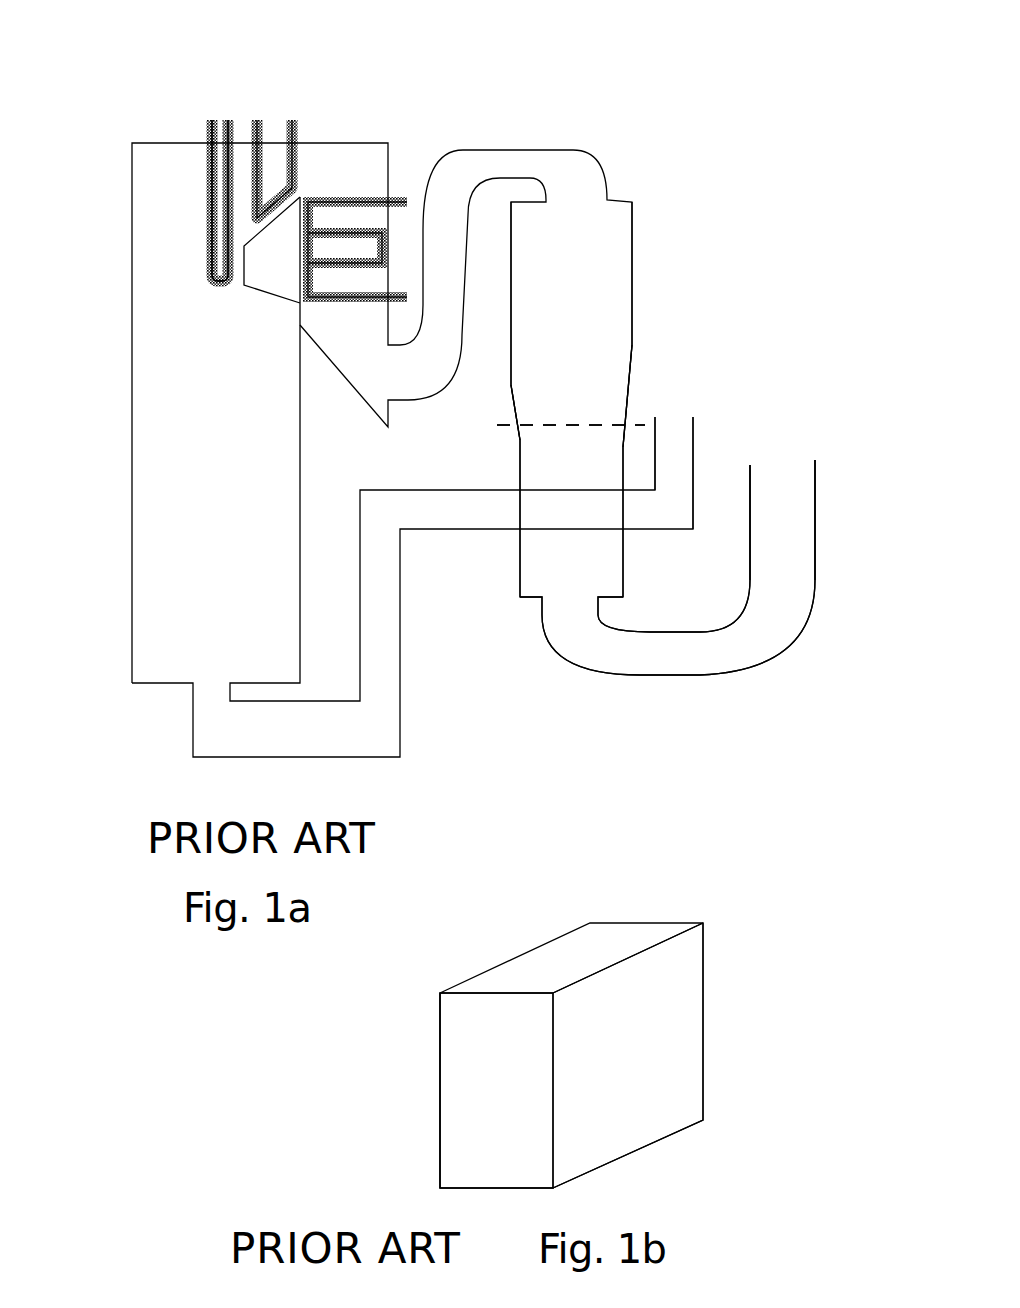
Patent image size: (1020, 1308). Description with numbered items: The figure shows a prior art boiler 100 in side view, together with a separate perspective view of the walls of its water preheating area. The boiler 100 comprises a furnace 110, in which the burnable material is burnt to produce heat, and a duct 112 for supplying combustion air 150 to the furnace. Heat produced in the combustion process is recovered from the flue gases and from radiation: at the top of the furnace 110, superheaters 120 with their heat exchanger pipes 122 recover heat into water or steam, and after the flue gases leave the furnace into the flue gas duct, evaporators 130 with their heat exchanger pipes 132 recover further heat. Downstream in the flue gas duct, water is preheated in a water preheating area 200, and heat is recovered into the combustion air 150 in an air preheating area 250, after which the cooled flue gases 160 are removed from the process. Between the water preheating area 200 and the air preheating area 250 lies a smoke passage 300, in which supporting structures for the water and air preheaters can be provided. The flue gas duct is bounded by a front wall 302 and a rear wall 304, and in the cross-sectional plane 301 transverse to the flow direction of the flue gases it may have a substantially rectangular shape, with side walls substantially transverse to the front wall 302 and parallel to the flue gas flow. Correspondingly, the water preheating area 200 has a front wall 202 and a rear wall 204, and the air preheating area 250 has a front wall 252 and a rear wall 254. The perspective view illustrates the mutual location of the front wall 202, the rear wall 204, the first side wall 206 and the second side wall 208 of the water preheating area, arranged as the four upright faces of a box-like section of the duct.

In FIG. 1a, the boiler 100 is at (120, 107).
In FIG. 1a, the furnace 110 is at (235, 567).
In FIG. 1a, the duct 112 is at (315, 742).
In FIG. 1a, the superheaters 120 is at (285, 100).
In FIG. 1a, the heat exchanger pipes 122 is at (213, 147).
In FIG. 1a, the evaporators 130 is at (402, 177).
In FIG. 1a, the heat exchanger pipes 132 is at (377, 200).
In FIG. 1a, the combustion air 150 is at (673, 440).
In FIG. 1a, the cooled flue gases 160 is at (782, 437).
In FIG. 1a, the water preheating area 200 is at (593, 290).
In FIG. 1a, the front wall 202 is at (645, 228).
In FIG. 1b, the front wall 202 is at (638, 1072).
In FIG. 1a, the rear wall 204 is at (517, 233).
In FIG. 1b, the rear wall 204 is at (427, 1046).
In FIG. 1b, the first side wall 206 is at (520, 1111).
In FIG. 1b, the second side wall 208 is at (713, 950).
In FIG. 1a, the air preheating area 250 is at (592, 524).
In FIG. 1a, the front wall 252 is at (635, 573).
In FIG. 1a, the rear wall 254 is at (513, 587).
In FIG. 1a, the smoke passage 300 is at (597, 397).
In FIG. 1a, the cross-sectional plane 301 is at (497, 425).
In FIG. 1a, the front wall 302 is at (638, 390).
In FIG. 1a, the rear wall 304 is at (507, 400).